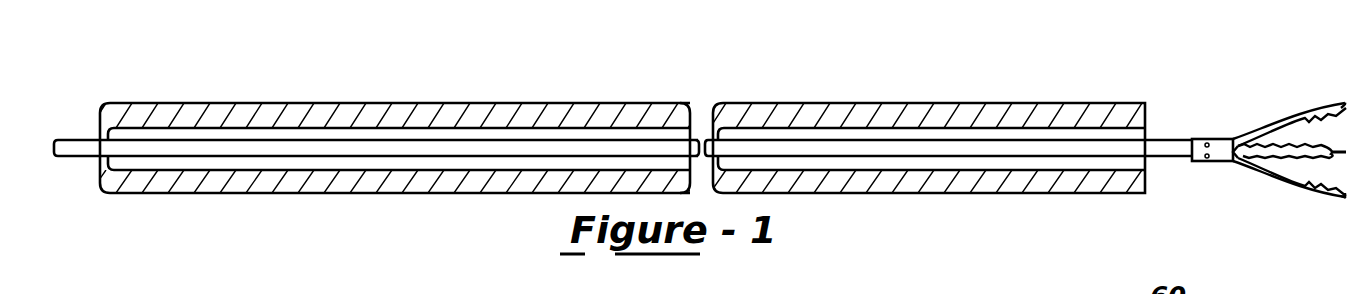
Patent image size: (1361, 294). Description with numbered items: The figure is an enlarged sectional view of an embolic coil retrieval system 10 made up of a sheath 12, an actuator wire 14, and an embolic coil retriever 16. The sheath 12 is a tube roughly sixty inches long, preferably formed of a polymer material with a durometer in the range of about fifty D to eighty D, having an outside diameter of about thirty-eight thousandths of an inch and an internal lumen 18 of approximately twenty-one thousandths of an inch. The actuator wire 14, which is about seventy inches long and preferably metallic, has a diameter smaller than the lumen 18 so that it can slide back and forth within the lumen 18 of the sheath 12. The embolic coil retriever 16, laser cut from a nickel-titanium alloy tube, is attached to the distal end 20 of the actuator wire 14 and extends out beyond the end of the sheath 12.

The embolic coil retrieval system 10 is at (718, 60).
The sheath 12 is at (930, 104).
The actuator wire 14 is at (353, 142).
The embolic coil retriever 16 is at (1226, 148).
The lumen 18 is at (465, 136).
The distal end 20 is at (1180, 148).